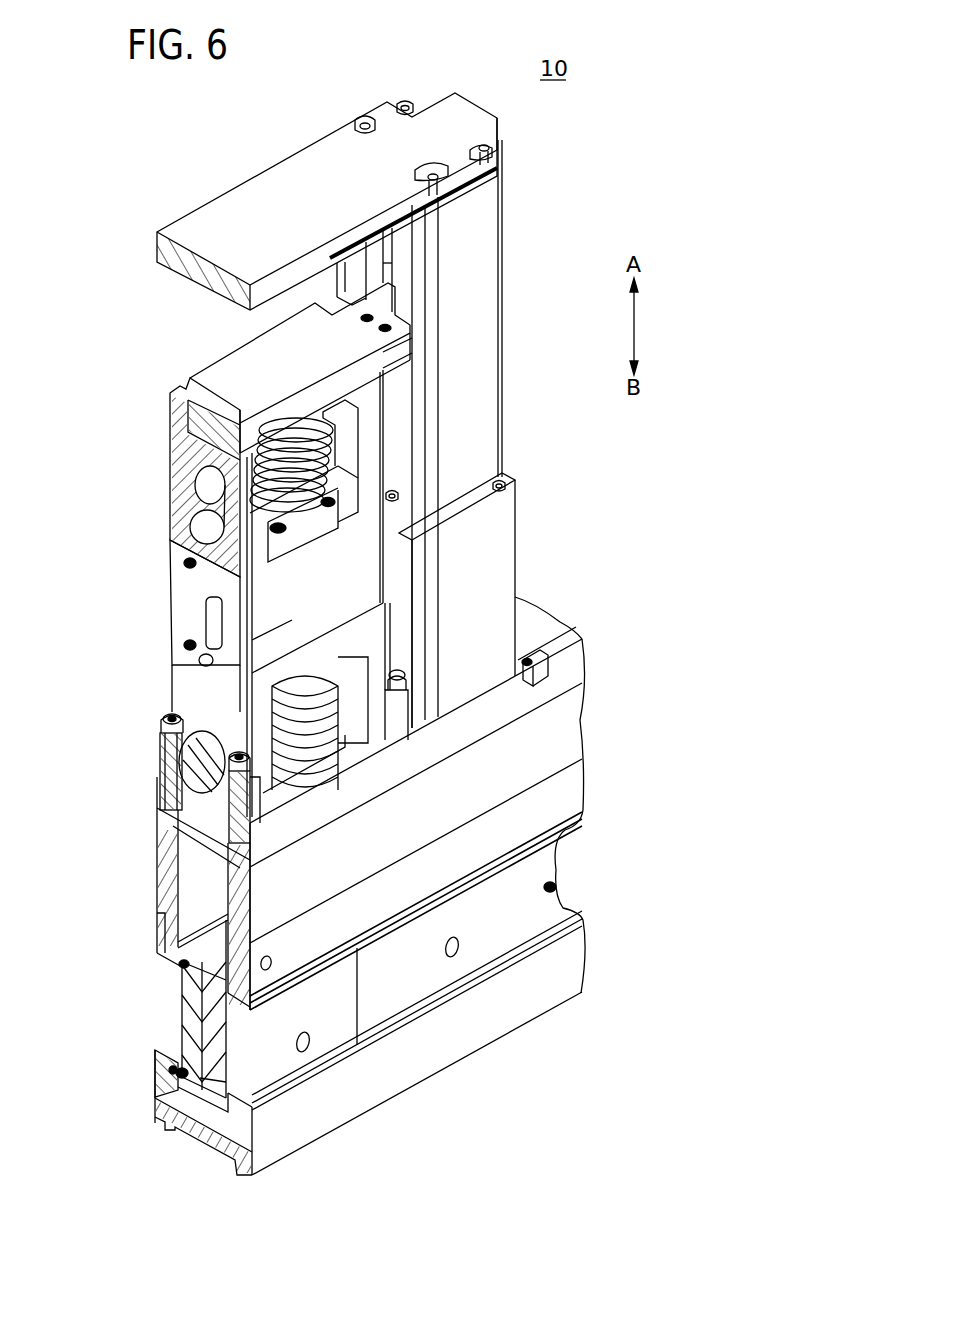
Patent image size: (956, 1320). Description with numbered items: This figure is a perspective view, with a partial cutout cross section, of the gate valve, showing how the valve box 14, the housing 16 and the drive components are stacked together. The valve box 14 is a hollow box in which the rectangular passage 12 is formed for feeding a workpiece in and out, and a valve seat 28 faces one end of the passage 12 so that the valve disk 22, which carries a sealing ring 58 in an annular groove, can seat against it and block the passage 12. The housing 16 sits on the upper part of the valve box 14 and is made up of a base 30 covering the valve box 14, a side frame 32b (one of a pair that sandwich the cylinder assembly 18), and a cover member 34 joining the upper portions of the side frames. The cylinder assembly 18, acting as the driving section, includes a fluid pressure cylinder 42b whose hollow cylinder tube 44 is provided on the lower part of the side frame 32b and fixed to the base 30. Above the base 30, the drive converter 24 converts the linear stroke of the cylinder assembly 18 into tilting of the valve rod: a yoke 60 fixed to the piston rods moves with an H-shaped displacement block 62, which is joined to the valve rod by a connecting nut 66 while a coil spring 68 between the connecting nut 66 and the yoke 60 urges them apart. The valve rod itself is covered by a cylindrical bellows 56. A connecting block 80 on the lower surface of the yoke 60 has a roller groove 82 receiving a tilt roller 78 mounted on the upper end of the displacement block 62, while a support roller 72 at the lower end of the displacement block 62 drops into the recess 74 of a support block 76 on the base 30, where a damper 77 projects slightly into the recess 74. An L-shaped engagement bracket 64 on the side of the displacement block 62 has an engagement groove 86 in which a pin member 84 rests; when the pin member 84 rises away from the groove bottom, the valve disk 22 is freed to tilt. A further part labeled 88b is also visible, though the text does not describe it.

The passage 12 is at (168, 967).
The valve box 14 is at (411, 1058).
The housing 16 is at (528, 193).
The cylinder assembly 18 is at (494, 600).
The valve disk 22 is at (190, 1006).
The drive converter 24 is at (190, 370).
The valve seat 28 is at (170, 1074).
The base 30 is at (566, 665).
The side frame 32b is at (473, 323).
The cover member 34 is at (236, 204).
The fluid pressure cylinder 42b is at (517, 583).
The cylinder tube 44 is at (470, 682).
The bellows 56 is at (300, 780).
The sealing ring 58 is at (170, 1103).
The yoke 60 is at (222, 372).
The displacement block 62 is at (185, 690).
The engagement bracket 64 is at (182, 583).
The connecting nut 66 is at (312, 540).
The spring 68 is at (303, 430).
The support roller 72 is at (162, 750).
The recess 74 is at (165, 722).
The support block 76 is at (398, 728).
The damper 77 is at (205, 802).
The tilt roller 78 is at (196, 523).
The connecting block 80 is at (178, 445).
The roller groove 82 is at (200, 482).
The pin member 84 is at (200, 661).
The engagement groove 86 is at (208, 625).
The guide plate 88b is at (410, 277).